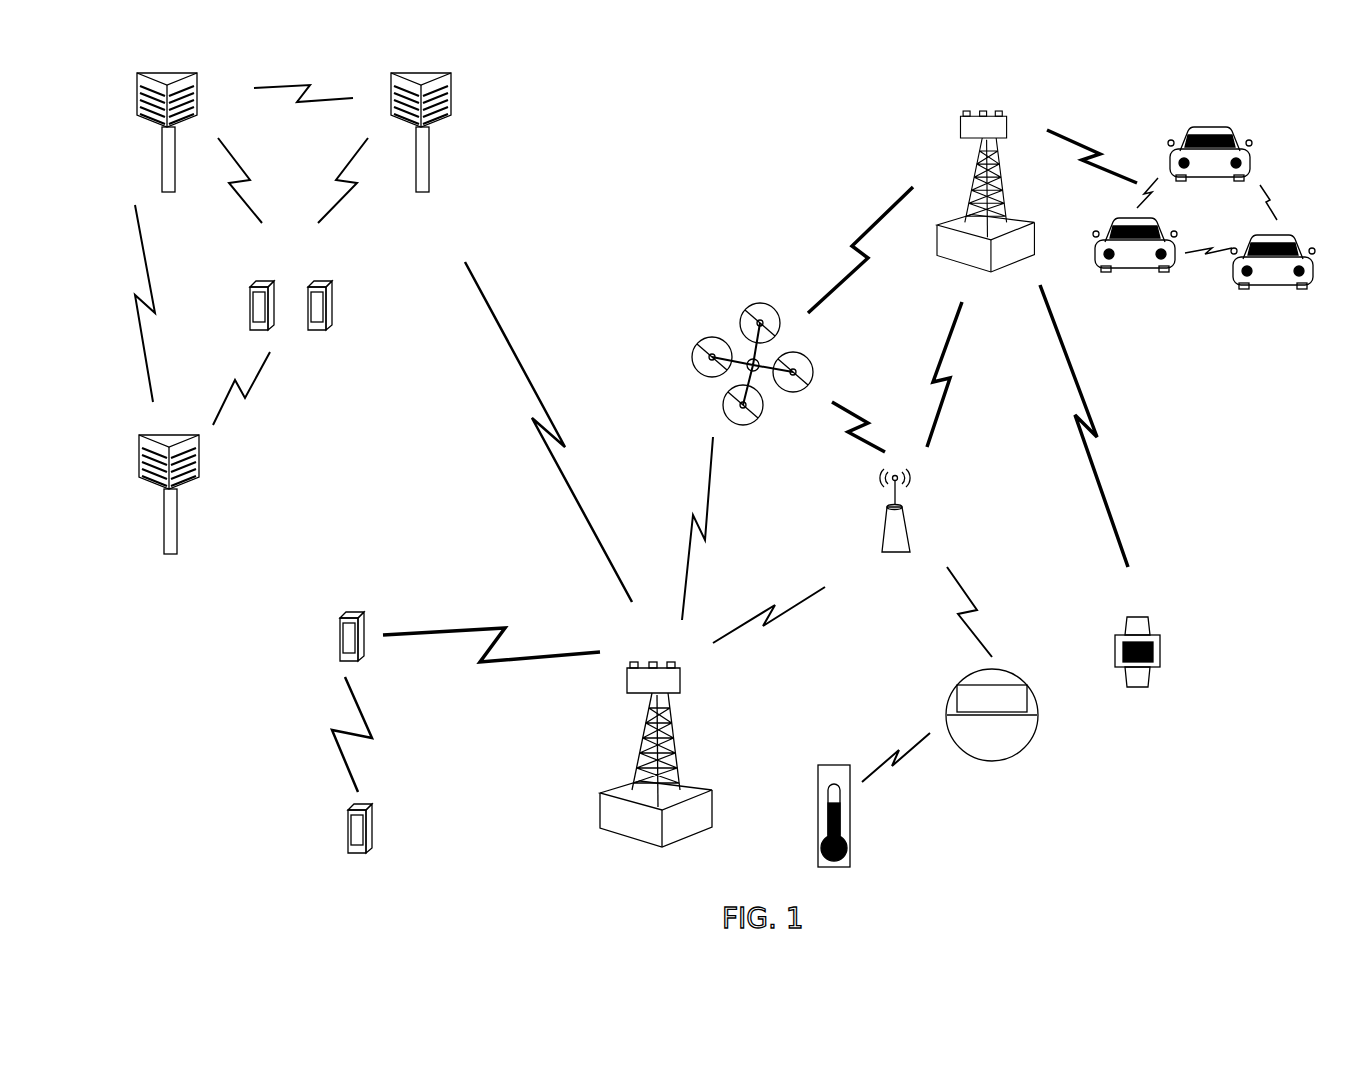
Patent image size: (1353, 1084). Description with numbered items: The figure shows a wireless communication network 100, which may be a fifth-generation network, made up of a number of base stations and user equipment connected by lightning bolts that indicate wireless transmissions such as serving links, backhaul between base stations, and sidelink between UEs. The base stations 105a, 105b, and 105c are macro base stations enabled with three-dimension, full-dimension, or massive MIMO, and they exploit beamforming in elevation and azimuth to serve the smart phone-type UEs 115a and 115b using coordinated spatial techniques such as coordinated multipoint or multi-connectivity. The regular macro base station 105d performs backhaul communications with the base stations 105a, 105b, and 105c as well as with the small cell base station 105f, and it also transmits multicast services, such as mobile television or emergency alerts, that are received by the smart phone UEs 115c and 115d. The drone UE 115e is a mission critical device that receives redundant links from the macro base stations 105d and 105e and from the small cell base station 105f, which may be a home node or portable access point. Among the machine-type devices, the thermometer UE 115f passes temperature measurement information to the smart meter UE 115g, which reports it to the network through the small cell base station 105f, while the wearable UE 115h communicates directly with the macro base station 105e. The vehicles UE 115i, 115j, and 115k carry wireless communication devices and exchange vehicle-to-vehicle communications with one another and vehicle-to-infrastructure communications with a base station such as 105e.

The wireless communication network 100 is at (691, 223).
The base station 105a is at (160, 167).
The base station 105b is at (427, 167).
The base station 105c is at (160, 542).
The macro base station 105d is at (617, 832).
The macro base station 105e is at (952, 263).
The small cell base station 105f is at (880, 545).
The UE 115a is at (247, 293).
The UE 115b is at (333, 293).
The UE 115c is at (337, 615).
The UE 115d is at (375, 815).
The UE (drone) 115e is at (693, 357).
The UE (thermometer) 115f is at (852, 853).
The UE (smart meter) 115g is at (1013, 757).
The UE (wearable device) 115h is at (1152, 682).
The UE (vehicle) 115i is at (1227, 123).
The UE (vehicle) 115j is at (1300, 282).
The UE (vehicle) 115k is at (1110, 267).